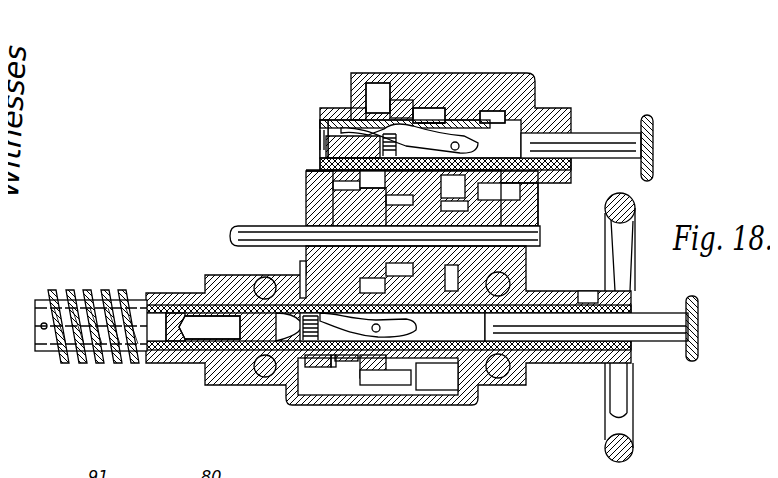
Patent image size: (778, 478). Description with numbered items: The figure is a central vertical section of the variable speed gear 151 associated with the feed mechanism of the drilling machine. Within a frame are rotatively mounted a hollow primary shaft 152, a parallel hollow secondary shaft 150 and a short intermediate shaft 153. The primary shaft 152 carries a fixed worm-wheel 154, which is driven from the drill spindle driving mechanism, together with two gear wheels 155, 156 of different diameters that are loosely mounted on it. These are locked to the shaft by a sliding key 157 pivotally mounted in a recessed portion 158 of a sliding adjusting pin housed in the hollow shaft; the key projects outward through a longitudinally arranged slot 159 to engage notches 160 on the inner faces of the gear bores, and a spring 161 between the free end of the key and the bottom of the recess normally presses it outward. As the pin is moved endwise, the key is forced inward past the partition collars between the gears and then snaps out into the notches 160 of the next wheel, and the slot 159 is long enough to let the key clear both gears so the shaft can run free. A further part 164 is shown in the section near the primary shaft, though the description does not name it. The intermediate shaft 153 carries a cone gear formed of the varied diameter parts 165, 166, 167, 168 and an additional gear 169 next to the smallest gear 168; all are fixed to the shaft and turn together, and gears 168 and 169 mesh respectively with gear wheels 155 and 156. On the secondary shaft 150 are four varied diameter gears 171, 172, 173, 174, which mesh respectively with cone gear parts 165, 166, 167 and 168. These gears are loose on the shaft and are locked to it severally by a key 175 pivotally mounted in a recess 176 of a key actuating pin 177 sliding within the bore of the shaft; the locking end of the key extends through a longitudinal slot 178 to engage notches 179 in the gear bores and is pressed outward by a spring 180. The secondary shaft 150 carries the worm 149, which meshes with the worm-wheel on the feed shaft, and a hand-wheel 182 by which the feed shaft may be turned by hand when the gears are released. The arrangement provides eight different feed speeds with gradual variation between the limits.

The worm 149 is at (80, 292).
The secondary shaft 150 is at (182, 333).
The variable speed gear 151 is at (214, 155).
The primary shaft 152 is at (318, 117).
The intermediate shaft 153 is at (512, 225).
The worm-wheel 154 is at (498, 100).
The gear wheel 155 is at (437, 124).
The gear wheel 156 is at (388, 95).
The sliding key 157 is at (372, 120).
The recessed portion 158 is at (552, 112).
The longitudinal slot 159 is at (450, 133).
The notches 160 is at (418, 112).
The spring 161 is at (314, 132).
The block 164 is at (396, 92).
The cone gear part 165 is at (300, 170).
The cone gear part 166 is at (322, 178).
The cone gear part 167 is at (298, 190).
The cone gear part 168 is at (519, 250).
The additional gear 169 is at (531, 191).
The gear 171 is at (318, 360).
The gear 172 is at (330, 360).
The gear 173 is at (378, 368).
The gear 174 is at (408, 368).
The key 175 is at (312, 327).
The recess 176 is at (455, 305).
The key actuating pin 177 is at (656, 318).
The longitudinal slot 178 is at (500, 283).
The notches 179 is at (262, 272).
The spring 180 is at (295, 324).
The hand-wheel 182 is at (607, 415).